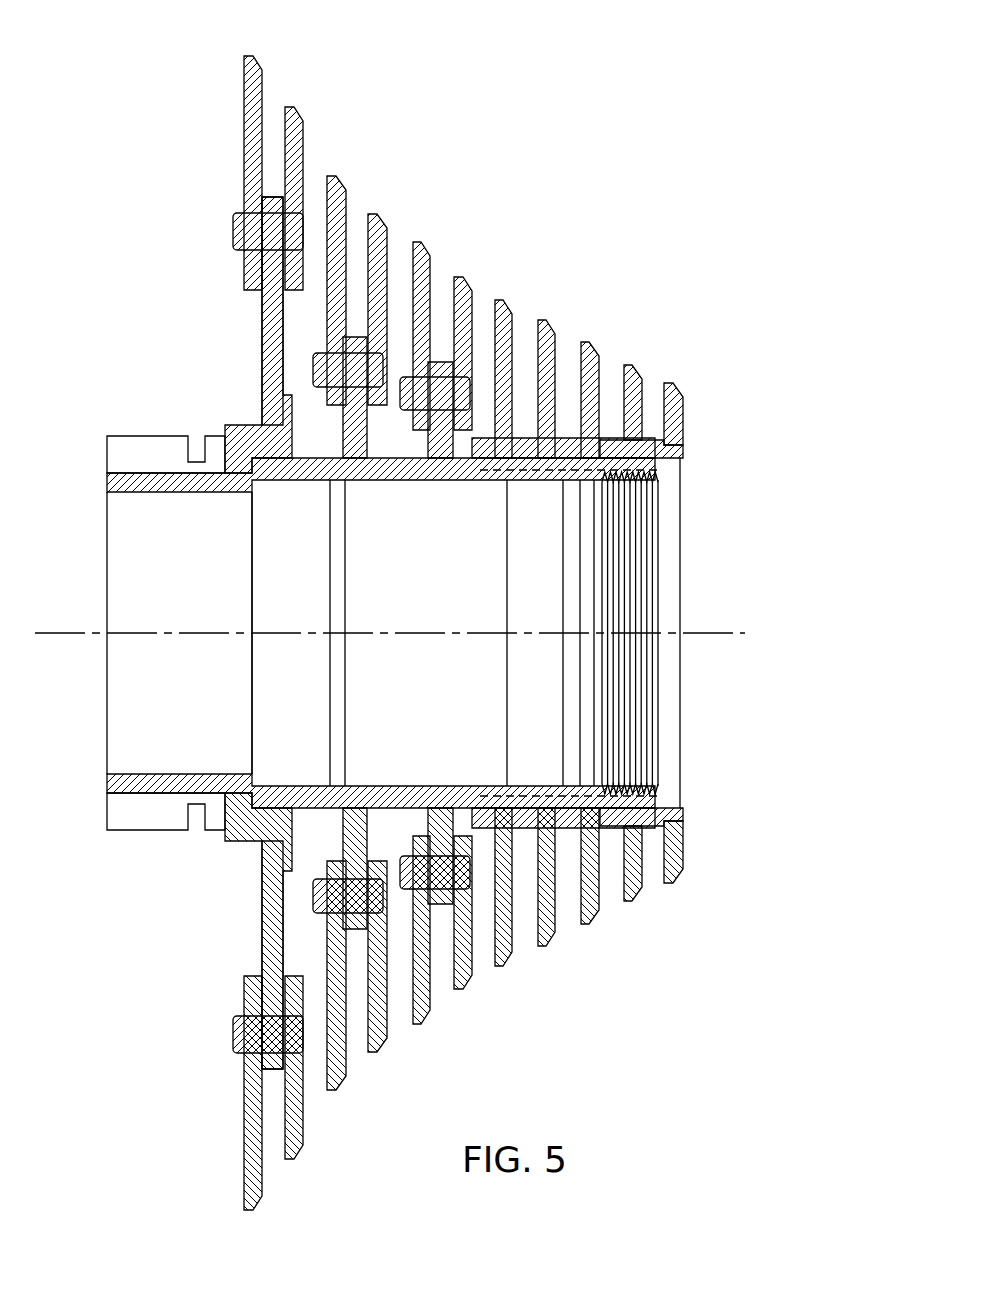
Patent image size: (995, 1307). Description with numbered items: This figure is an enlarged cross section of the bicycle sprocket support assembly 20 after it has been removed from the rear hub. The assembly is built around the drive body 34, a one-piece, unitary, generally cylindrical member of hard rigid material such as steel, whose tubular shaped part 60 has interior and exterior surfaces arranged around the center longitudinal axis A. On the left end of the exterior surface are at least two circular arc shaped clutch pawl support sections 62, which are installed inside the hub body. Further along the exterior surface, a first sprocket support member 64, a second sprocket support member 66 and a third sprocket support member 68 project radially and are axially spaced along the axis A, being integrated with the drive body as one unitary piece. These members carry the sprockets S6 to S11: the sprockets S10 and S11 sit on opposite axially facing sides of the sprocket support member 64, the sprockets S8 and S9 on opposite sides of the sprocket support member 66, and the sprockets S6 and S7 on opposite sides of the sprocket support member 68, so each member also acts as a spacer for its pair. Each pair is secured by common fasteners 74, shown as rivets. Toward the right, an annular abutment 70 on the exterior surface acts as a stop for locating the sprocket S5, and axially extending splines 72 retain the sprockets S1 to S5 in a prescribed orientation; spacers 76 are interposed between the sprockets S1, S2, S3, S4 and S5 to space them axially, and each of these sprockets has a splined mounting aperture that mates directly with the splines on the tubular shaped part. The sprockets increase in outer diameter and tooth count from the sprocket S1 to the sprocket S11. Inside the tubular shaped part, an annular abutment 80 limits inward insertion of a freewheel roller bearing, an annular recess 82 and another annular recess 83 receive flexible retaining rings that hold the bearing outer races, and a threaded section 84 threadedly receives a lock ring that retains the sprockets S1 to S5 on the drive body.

The bicycle sprocket support assembly 20 is at (524, 170).
The drive body 34 is at (107, 520).
The tubular shaped part 60 is at (290, 482).
The clutch pawl support sections 62 is at (150, 436).
The first sprocket support member 64 is at (262, 336).
The second sprocket support member 66 is at (343, 441).
The third sprocket support member 68 is at (440, 460).
The annular abutment 70 is at (490, 455).
The axially extending splines 72 is at (664, 452).
The fasteners 74 is at (233, 232).
The spacers 76 is at (517, 456).
The annular abutment 80 is at (253, 792).
The annular recess 82 is at (341, 690).
The annular recess 83 is at (566, 650).
The threaded section 84 is at (640, 562).
The center longitudinal axis A is at (716, 640).
The sprocket S1 is at (676, 383).
The sprocket S2 is at (634, 365).
The sprocket S3 is at (590, 342).
The sprocket S4 is at (547, 320).
The sprocket S5 is at (504, 300).
The sprocket S6 is at (463, 277).
The sprocket S7 is at (422, 242).
The sprocket S8 is at (379, 214).
The sprocket S9 is at (337, 176).
The sprocket S10 is at (294, 107).
The sprocket S11 is at (252, 56).